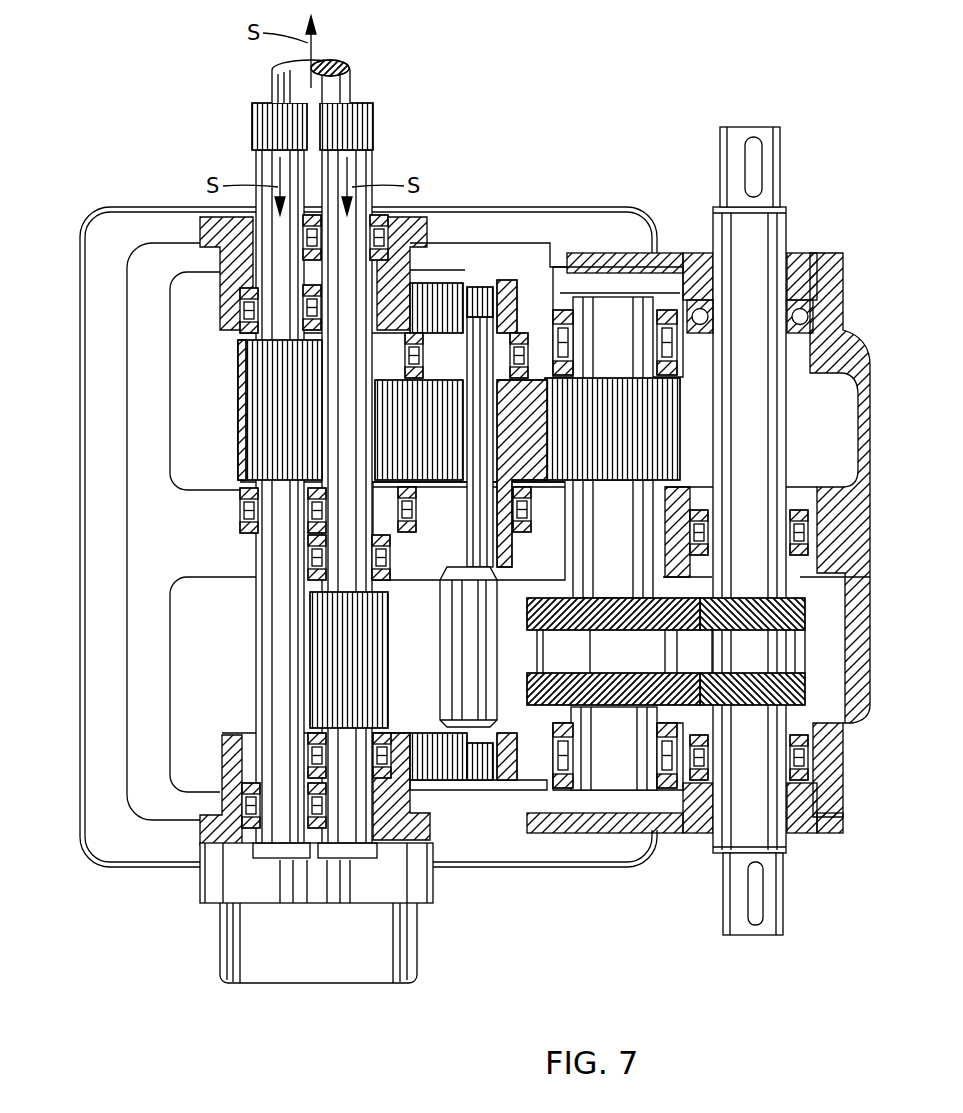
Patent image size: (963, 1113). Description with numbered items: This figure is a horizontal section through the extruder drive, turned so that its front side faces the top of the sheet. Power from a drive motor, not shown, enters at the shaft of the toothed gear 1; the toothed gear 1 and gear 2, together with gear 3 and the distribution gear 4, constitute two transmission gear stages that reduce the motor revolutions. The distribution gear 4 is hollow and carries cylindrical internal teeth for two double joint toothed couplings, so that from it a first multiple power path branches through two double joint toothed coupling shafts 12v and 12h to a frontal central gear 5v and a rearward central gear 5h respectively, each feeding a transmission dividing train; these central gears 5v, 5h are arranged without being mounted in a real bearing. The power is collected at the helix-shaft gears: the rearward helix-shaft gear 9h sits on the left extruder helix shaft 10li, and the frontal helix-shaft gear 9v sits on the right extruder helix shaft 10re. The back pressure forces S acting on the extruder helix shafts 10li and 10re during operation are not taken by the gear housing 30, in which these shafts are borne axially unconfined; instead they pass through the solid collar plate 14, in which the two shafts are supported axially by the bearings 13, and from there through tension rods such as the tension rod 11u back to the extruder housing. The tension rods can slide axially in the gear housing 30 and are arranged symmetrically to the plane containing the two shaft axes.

The toothed gear 1 is at (765, 653).
The gear 2 is at (572, 650).
The gear 3 is at (636, 407).
The distribution gear 4 is at (520, 443).
The frontal central gear 5v is at (492, 293).
The rearward central gear 5h is at (505, 787).
The frontal helix-shaft gear 9v is at (272, 389).
The rearward helix-shaft gear 9h is at (345, 658).
The right extruder helix shaft 10re is at (268, 178).
The left extruder helix shaft 10li is at (365, 180).
The tension rod 11u is at (318, 88).
The double joint toothed coupling shaft 12v is at (473, 482).
The double joint toothed coupling shaft 12h is at (470, 655).
The bearings 13 is at (273, 857).
The solid collar plate 14 is at (317, 880).
The gear housing 30 is at (78, 488).